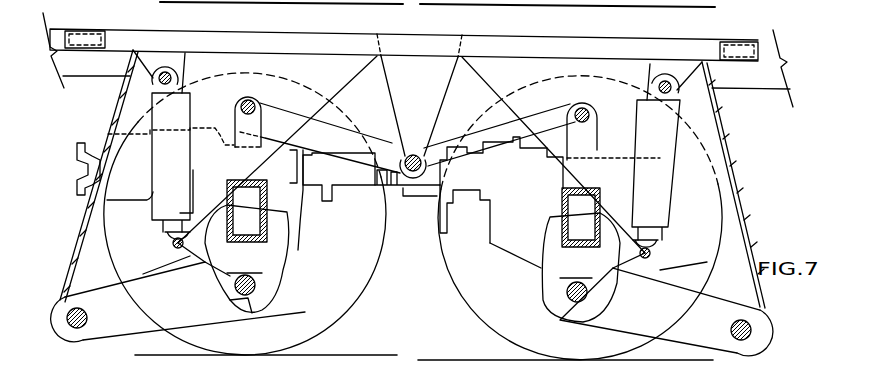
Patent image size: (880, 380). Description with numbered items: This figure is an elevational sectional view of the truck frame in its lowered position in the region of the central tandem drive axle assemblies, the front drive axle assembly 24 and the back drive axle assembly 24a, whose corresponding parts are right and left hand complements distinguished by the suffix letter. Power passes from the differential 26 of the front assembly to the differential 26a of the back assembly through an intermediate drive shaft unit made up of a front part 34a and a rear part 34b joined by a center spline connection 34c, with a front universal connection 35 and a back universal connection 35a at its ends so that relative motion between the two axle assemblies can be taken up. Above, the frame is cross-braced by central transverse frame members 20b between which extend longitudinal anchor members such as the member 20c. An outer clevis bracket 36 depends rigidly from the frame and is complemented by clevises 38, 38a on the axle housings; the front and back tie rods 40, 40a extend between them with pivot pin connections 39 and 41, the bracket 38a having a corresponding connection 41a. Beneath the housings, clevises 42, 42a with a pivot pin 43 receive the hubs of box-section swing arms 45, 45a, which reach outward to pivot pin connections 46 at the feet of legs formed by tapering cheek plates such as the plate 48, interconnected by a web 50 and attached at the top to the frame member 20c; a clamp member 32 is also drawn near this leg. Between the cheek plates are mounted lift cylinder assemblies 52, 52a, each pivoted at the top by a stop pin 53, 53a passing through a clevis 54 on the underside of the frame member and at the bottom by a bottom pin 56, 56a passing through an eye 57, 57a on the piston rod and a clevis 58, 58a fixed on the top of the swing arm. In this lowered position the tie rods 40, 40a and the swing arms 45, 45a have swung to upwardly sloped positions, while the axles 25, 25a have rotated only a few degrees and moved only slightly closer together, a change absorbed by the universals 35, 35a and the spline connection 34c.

The central transverse frame member 20b is at (106, 30).
The longitudinal anchor member 20c is at (264, 58).
The clevis 54 is at (152, 58).
The stop pin 53 is at (172, 76).
The stop pin 53a is at (690, 90).
The lift cylinder assembly 52 is at (143, 166).
The lift cylinder assembly 52a is at (652, 212).
The web 50 is at (80, 216).
The cheek plate 48 is at (85, 262).
The clamp bracket 32 is at (77, 163).
The clevis 38 is at (235, 116).
The clevis 38a is at (603, 146).
The front tie rod 40 is at (335, 128).
The back tie rod 40a is at (490, 102).
The pivot pin connection 41 is at (280, 85).
The wheel outline 41a is at (590, 104).
The outer clevis bracket 36 is at (397, 113).
The pivot pin connection 39 is at (430, 150).
The front drive axle assembly 24 is at (316, 300).
The back drive axle assembly 24a is at (512, 311).
The axle 25 is at (266, 198).
The axle 25a is at (562, 206).
The differential 26 is at (286, 258).
The differential 26a is at (540, 270).
The clevis 42 is at (260, 300).
The clevis 42a is at (565, 305).
The pivot pin 43 is at (235, 303).
The swing arm 45 is at (185, 316).
The swing arm 45a is at (638, 308).
The pivot pin connection 46 is at (62, 326).
The bottom pin 56 is at (172, 246).
The bottom pin 56a is at (655, 255).
The eye 57 is at (165, 238).
The eye 57a is at (660, 246).
The clevis 58 is at (166, 275).
The clevis 58a is at (706, 278).
The front part 34a is at (333, 184).
The rear part 34b is at (410, 190).
The center spline connection 34c is at (380, 188).
The front universal connection 35 is at (310, 203).
The back universal connection 35a is at (501, 190).